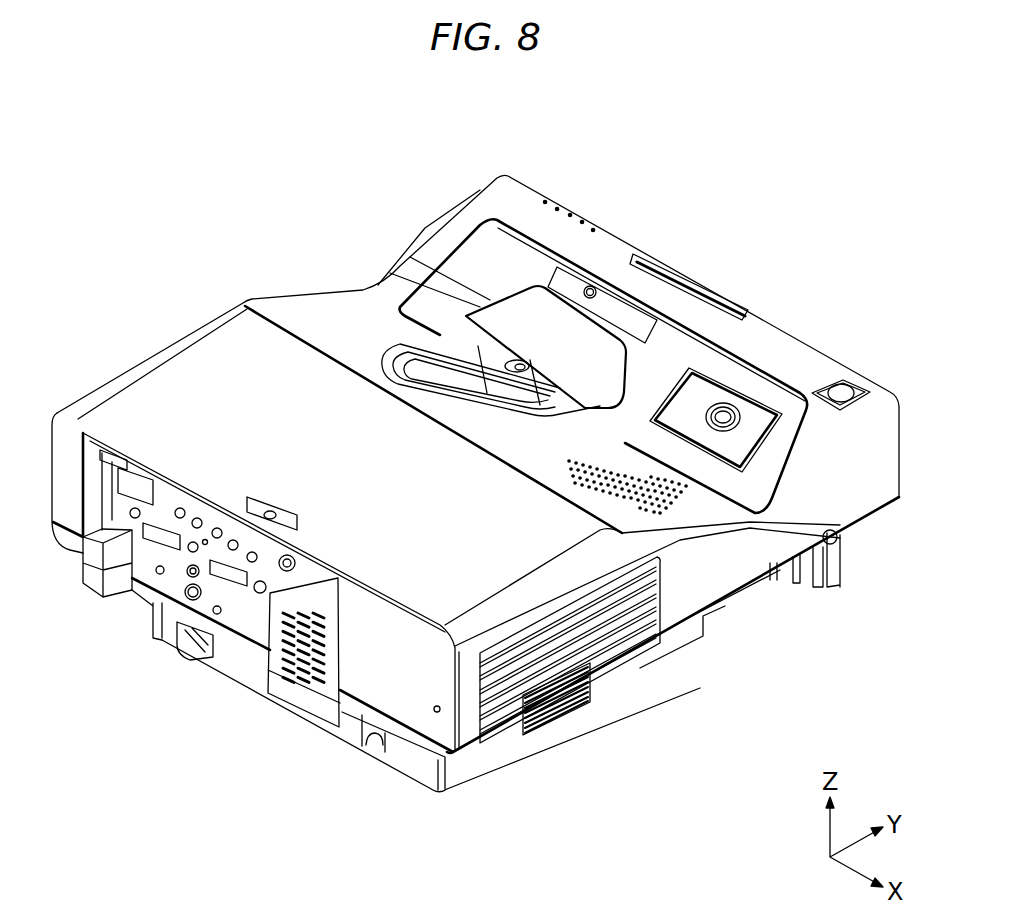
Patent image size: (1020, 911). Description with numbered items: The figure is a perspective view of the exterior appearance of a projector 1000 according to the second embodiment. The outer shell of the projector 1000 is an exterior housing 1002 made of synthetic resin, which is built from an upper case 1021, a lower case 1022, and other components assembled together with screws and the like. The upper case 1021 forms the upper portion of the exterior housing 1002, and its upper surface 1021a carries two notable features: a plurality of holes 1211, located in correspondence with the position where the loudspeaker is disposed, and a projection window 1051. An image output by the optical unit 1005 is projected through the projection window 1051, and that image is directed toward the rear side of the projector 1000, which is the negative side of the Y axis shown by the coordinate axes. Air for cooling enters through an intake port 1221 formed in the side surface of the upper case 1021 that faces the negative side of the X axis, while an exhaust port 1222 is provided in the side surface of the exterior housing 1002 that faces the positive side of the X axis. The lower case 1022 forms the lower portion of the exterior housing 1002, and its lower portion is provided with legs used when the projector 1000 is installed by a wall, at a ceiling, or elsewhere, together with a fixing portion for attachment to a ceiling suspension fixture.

The projector 1000 is at (876, 151).
The exterior housing 1002 is at (180, 382).
The optical unit 1005 is at (605, 350).
The upper case 1021 is at (697, 590).
The upper surface 1021a is at (290, 317).
The lower case 1022 is at (637, 670).
The projection window 1051 is at (510, 318).
The holes 1211 is at (672, 487).
The intake port 1221 is at (77, 400).
The exhaust port 1222 is at (527, 693).